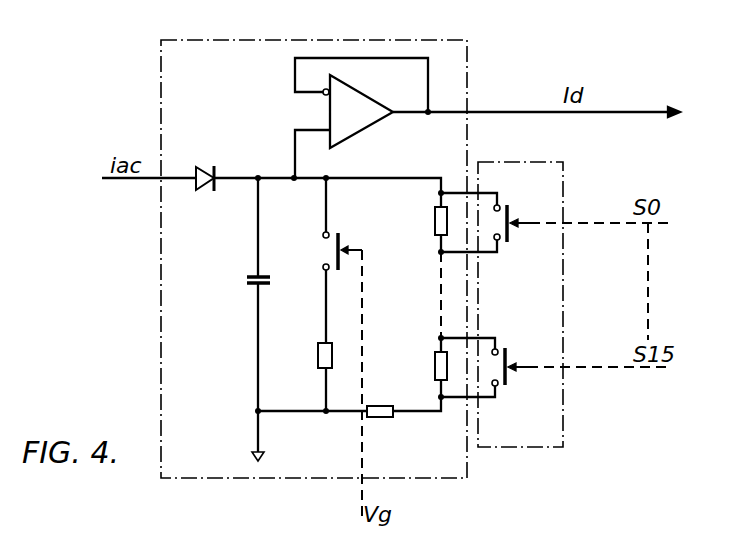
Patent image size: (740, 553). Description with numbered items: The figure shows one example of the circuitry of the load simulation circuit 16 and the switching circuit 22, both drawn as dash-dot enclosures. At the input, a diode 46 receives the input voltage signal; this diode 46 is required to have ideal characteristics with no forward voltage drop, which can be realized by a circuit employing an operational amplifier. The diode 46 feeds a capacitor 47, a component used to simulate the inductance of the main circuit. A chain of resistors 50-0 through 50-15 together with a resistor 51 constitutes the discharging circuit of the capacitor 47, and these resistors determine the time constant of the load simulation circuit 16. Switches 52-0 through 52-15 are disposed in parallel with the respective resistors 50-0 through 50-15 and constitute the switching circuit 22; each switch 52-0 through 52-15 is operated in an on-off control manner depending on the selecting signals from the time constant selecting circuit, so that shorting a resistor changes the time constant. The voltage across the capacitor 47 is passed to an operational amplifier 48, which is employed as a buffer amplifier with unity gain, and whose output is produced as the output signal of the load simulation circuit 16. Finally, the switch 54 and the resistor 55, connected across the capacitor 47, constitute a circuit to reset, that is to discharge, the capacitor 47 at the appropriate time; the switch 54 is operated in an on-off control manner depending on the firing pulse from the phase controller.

The load simulation circuit 16 is at (400, 35).
The switching circuit 22 is at (536, 152).
The diode 46 is at (200, 168).
The capacitor 47 is at (257, 273).
The operational amplifier 48 is at (376, 118).
The resistor 50-0 is at (436, 226).
The resistor 50-15 is at (435, 366).
The resistor 51 is at (382, 419).
The switch 52-0 is at (499, 241).
The switch 52-15 is at (500, 387).
The switch 54 is at (323, 248).
The resistor 55 is at (318, 355).